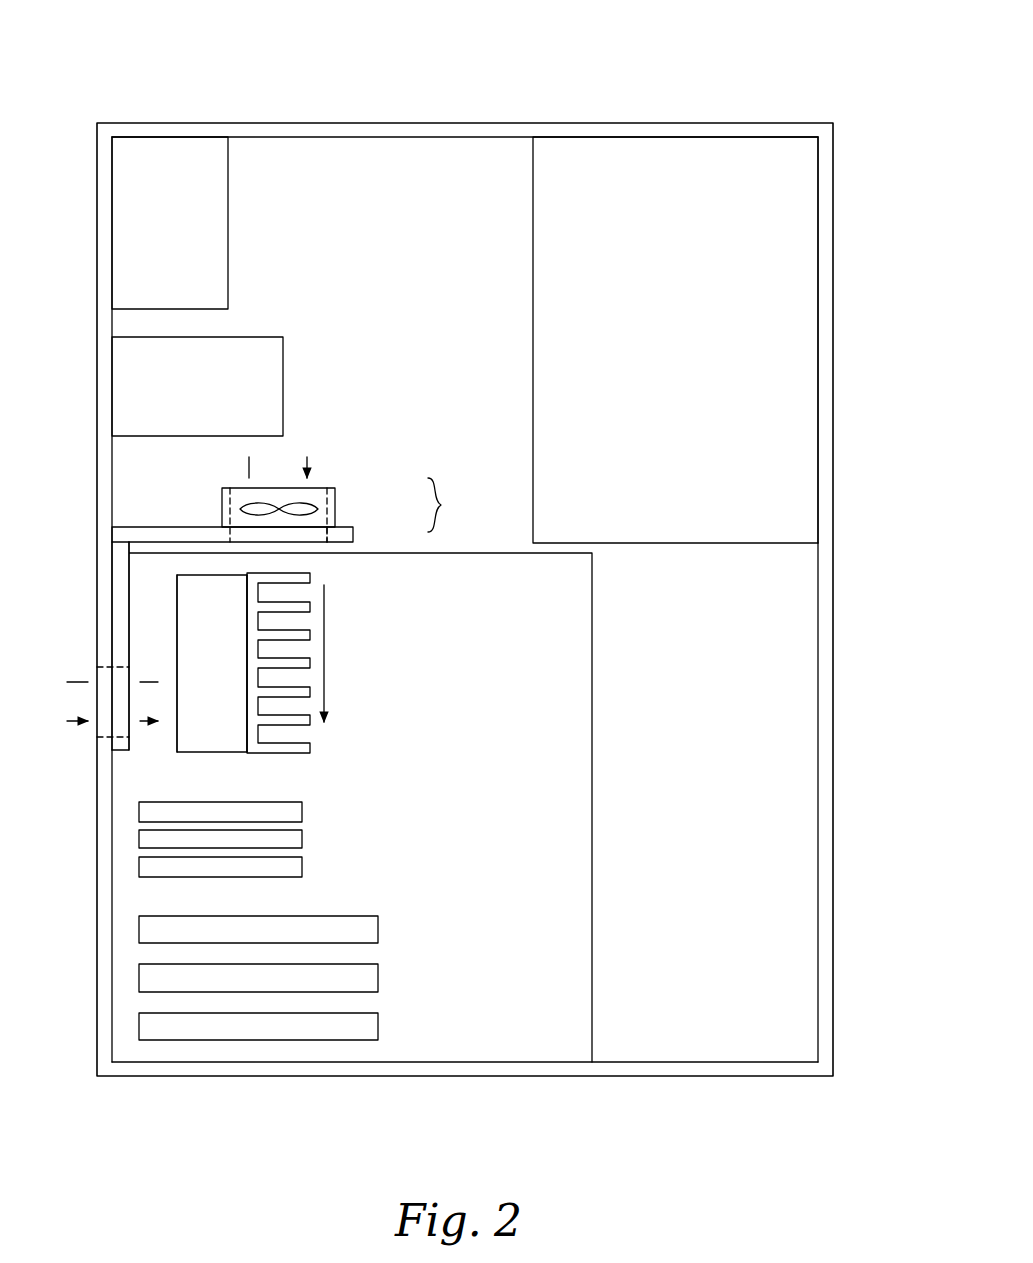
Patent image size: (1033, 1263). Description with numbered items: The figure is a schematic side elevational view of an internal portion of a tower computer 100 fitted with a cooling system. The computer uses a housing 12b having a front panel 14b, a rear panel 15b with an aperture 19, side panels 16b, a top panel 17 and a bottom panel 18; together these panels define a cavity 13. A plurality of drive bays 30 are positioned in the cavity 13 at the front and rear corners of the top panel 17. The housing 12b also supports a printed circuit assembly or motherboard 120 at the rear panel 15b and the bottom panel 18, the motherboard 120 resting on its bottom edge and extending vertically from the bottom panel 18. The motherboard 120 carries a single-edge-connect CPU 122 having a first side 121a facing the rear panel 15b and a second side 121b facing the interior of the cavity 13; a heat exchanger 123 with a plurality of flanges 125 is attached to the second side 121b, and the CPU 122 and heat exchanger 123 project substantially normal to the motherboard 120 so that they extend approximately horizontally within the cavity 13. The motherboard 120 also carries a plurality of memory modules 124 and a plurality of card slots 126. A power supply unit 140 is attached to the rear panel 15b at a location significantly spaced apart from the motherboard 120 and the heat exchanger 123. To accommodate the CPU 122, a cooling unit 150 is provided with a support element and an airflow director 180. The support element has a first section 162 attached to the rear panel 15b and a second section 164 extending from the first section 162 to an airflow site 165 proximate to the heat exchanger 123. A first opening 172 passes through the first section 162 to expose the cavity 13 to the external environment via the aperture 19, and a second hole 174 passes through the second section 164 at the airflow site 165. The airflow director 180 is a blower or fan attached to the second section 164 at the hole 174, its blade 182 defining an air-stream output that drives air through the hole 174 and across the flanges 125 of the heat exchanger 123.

The tower computer 100 is at (724, 88).
The top panel 17 is at (488, 128).
The housing 12b is at (834, 122).
The front panel 14b is at (827, 737).
The rear panel 15b is at (104, 888).
The bottom panel 18 is at (676, 1066).
The drive bays 30 is at (220, 232).
The power supply unit 140 is at (274, 360).
The airflow director 180 is at (336, 496).
The blade 182 is at (281, 506).
The second section 164 is at (194, 534).
The second hole 174 is at (336, 534).
The cooling unit 150 is at (446, 506).
The motherboard 120 is at (578, 790).
The airflow site 165 is at (328, 560).
The first section 162 is at (122, 588).
The aperture 19 is at (100, 748).
The first opening 172 is at (128, 668).
The single-edge-connect CPU 122 is at (222, 736).
The first side 121a is at (176, 590).
The second side 121b is at (244, 708).
The flanges 125 is at (305, 633).
The heat exchanger 123 is at (303, 748).
The memory modules 124 is at (296, 813).
The card slots 126 is at (368, 930).
The cavity 13 is at (776, 670).
The side panels 16b is at (742, 892).